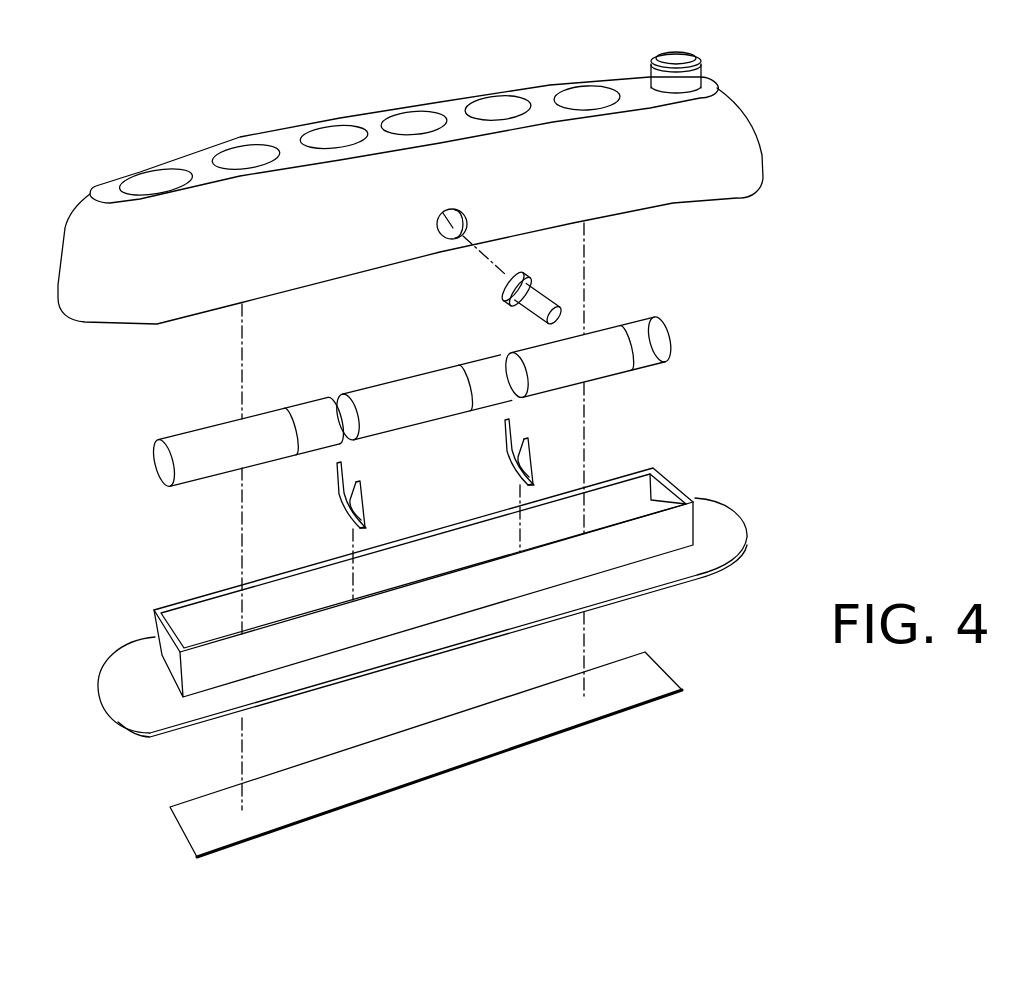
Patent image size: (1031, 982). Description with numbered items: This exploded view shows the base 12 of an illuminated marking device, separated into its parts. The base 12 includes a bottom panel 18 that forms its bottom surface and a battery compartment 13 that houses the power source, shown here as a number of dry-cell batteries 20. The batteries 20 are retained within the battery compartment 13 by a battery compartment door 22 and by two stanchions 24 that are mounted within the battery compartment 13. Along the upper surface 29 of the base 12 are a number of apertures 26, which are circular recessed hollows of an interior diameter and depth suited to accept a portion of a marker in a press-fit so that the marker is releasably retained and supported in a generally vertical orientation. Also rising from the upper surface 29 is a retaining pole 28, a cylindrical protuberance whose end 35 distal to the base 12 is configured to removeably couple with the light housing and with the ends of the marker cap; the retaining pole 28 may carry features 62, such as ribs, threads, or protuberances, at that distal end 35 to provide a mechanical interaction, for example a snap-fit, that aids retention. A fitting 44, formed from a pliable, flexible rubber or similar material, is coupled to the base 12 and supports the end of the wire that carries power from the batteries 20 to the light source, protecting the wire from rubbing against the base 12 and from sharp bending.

The base 12 is at (757, 137).
The battery compartment 13 is at (178, 621).
The bottom panel 18 is at (727, 507).
The dry-cell batteries 20 is at (215, 430).
The battery compartment door 22 is at (557, 734).
The stanchions 24 is at (363, 503).
The apertures 26 is at (139, 191).
The retaining pole 28 is at (698, 55).
The upper surface 29 is at (197, 158).
The end 35 is at (676, 52).
The fitting 44 is at (532, 318).
The features 62 is at (703, 66).